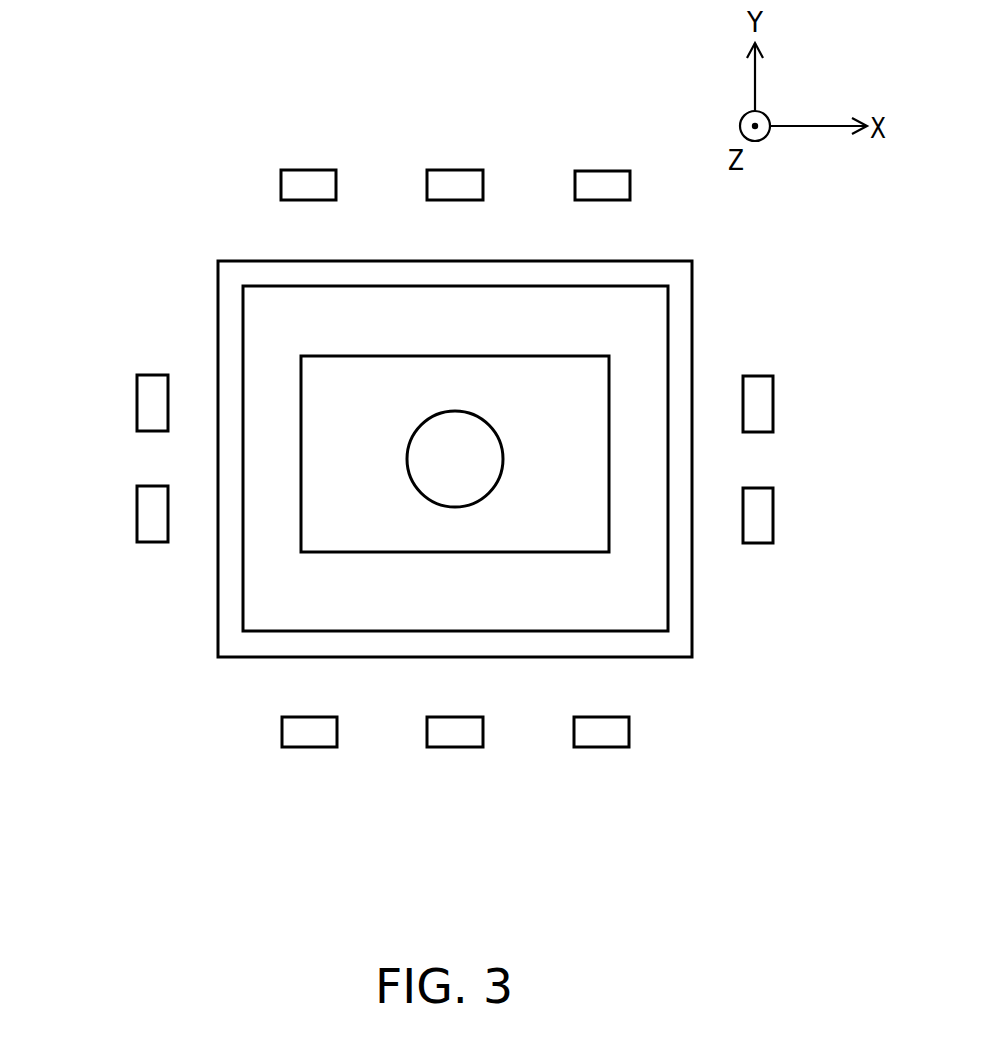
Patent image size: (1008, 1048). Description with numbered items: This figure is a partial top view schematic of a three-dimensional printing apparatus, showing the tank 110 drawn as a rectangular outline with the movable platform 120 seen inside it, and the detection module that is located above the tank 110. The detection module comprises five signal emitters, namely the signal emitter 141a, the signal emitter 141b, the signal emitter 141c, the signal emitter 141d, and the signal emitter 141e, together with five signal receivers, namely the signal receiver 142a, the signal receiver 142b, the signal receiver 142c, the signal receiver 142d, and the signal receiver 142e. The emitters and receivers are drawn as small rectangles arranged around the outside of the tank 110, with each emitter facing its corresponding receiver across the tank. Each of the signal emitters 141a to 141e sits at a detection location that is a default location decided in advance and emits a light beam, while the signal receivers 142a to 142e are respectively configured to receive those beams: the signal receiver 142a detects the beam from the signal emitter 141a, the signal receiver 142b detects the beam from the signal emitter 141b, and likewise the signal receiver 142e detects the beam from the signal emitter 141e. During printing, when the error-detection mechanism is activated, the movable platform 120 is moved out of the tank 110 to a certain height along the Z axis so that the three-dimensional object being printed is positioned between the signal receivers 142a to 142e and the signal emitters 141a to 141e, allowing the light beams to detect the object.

The tank 110 is at (693, 623).
The movable platform 120 is at (587, 357).
The signal emitter 141a is at (307, 170).
The signal emitter 141b is at (455, 170).
The signal emitter 141c is at (600, 171).
The signal emitter 141d is at (773, 403).
The signal emitter 141e is at (773, 515).
The signal receiver 142a is at (306, 747).
The signal receiver 142b is at (453, 747).
The signal receiver 142c is at (600, 747).
The signal receiver 142d is at (137, 402).
The signal receiver 142e is at (137, 514).